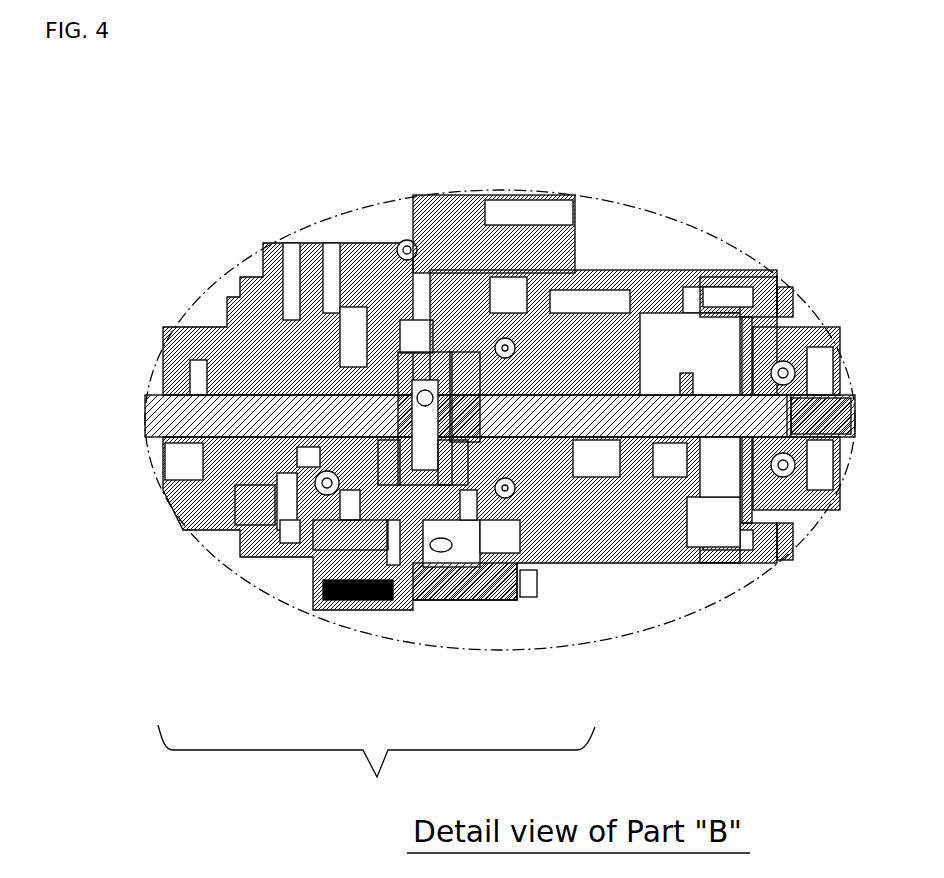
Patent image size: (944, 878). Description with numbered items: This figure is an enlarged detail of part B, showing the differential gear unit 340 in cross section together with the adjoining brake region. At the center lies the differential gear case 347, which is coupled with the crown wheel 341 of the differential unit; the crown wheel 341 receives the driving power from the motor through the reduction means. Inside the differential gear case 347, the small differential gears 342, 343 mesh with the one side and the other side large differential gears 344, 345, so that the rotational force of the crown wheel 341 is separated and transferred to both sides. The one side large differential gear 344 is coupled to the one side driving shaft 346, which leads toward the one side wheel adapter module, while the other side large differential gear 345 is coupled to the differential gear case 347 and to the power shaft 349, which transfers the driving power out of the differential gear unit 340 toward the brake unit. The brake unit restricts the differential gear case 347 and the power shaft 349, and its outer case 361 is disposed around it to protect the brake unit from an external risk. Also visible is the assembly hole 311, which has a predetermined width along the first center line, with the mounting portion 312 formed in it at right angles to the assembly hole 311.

The assembly hole 311 is at (313, 405).
The mounting portion 312 is at (282, 306).
The differential gear unit 340 is at (376, 766).
The crown wheel of the differential unit 341 is at (353, 542).
The small differential gear 342 is at (389, 455).
The small differential gear 343 is at (444, 473).
The one side large differential gear 344 is at (262, 520).
The other side large differential gear 345 is at (464, 448).
The one side driving shaft 346 is at (253, 432).
The differential gear case 347 is at (424, 368).
The power shaft 349 is at (643, 425).
The outer case of the brake unit 361 is at (660, 540).